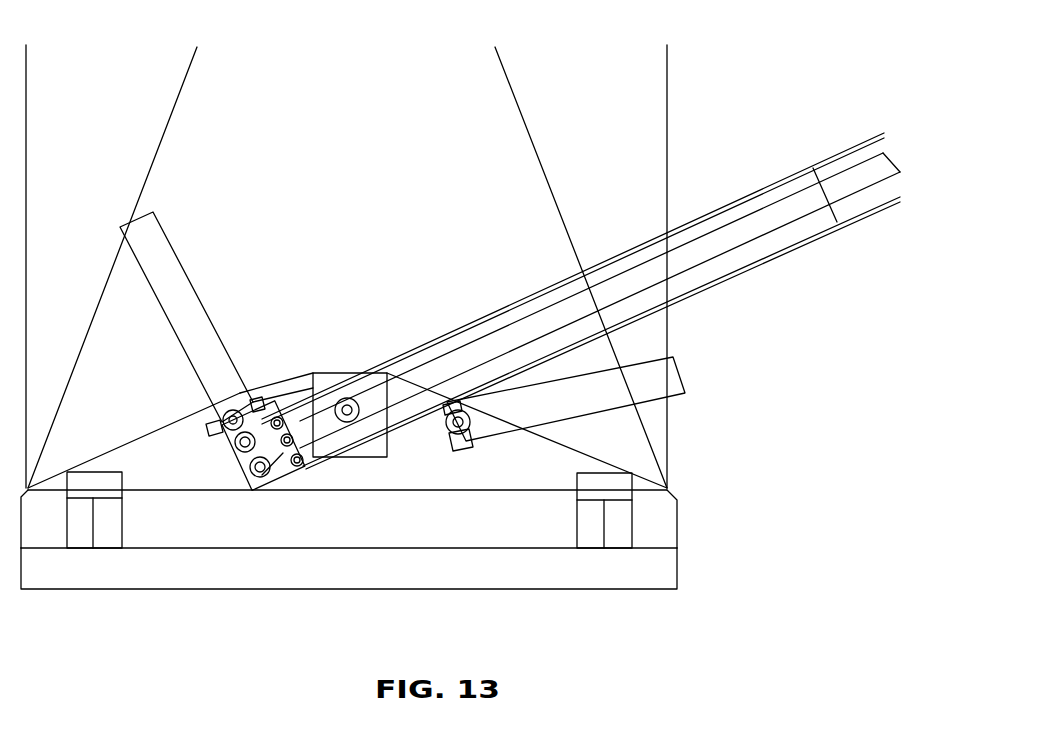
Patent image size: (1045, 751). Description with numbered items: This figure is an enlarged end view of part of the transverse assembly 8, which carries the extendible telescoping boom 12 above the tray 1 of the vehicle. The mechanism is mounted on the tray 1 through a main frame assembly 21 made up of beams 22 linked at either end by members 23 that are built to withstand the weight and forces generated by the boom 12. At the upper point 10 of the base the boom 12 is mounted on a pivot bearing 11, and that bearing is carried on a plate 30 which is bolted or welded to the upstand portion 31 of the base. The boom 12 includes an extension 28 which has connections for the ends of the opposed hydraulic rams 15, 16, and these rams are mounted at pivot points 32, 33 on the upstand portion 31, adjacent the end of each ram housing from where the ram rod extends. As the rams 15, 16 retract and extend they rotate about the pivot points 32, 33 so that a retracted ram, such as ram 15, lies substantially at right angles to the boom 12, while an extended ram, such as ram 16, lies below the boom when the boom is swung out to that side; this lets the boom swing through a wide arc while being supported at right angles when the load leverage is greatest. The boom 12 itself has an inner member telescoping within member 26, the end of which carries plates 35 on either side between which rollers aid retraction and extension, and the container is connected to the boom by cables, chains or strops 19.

The tray 1 is at (679, 565).
The transverse assembly 8 is at (254, 379).
The upper point 10 is at (276, 386).
The pivot bearing 11 is at (350, 375).
The telescoping boom 12 is at (581, 301).
The hydraulic ram 15 is at (184, 271).
The hydraulic ram 16 is at (645, 393).
The cables, chains or strops 19 is at (156, 155).
The main frame assembly 21 is at (696, 487).
The beams 22 is at (124, 522).
The members 23 is at (390, 540).
The member 26 is at (676, 300).
The extension 28 is at (284, 482).
The plate 30 is at (322, 372).
The upstand portion 31 is at (152, 434).
The pivot point 32 is at (451, 438).
The pivot point 33 is at (211, 436).
The plates 35 is at (726, 245).